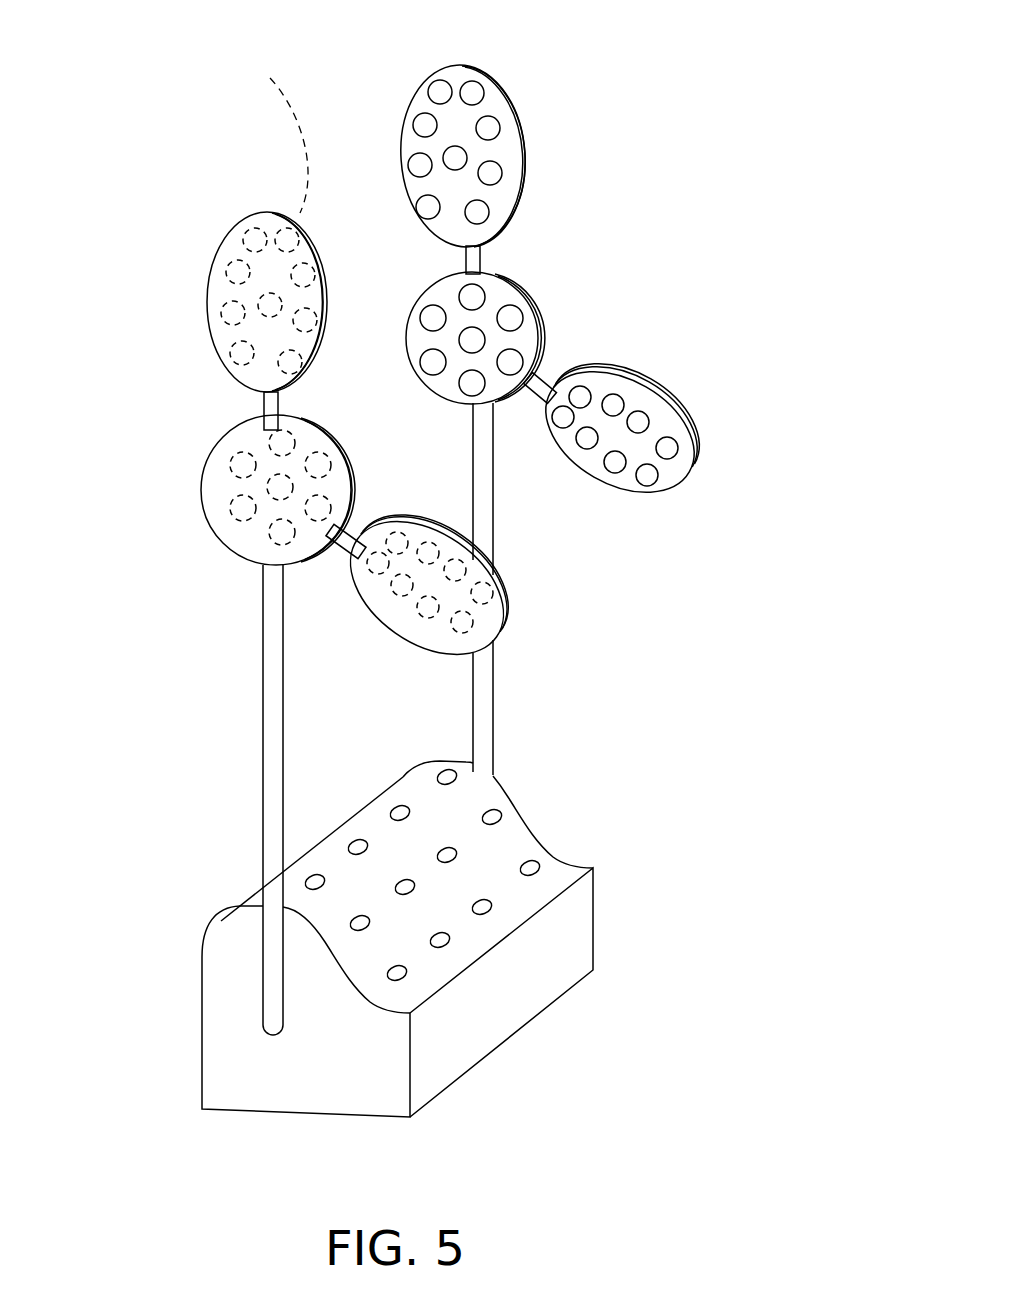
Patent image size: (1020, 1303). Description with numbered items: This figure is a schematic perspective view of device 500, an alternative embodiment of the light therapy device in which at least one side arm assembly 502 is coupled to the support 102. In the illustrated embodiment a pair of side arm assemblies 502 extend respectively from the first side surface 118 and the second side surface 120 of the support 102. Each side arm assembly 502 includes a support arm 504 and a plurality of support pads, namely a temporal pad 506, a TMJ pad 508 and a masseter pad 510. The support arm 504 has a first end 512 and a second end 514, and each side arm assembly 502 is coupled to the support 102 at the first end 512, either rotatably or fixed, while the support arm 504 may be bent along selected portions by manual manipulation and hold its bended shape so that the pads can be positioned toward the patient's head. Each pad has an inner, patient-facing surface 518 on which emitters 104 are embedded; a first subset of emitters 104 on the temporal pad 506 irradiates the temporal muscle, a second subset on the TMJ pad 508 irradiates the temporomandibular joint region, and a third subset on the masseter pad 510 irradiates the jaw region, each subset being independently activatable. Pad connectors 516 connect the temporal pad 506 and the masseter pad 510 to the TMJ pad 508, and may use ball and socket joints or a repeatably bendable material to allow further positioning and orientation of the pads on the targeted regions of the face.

The device 500 is at (642, 128).
The side arm assembly 502 is at (400, 74).
The support arm 504 is at (263, 653).
The temporal pad 506 is at (460, 67).
The TMJ pad 508 is at (543, 300).
The masseter pad 510 is at (693, 473).
The first end 512 is at (248, 1011).
The second end 514 is at (196, 560).
The pad connector 516 is at (481, 260).
The inner surface 518 is at (402, 140).
The support 102 is at (192, 893).
The emitters 104 is at (245, 230).
The first side surface 118 is at (208, 1077).
The second side surface 120 is at (525, 812).